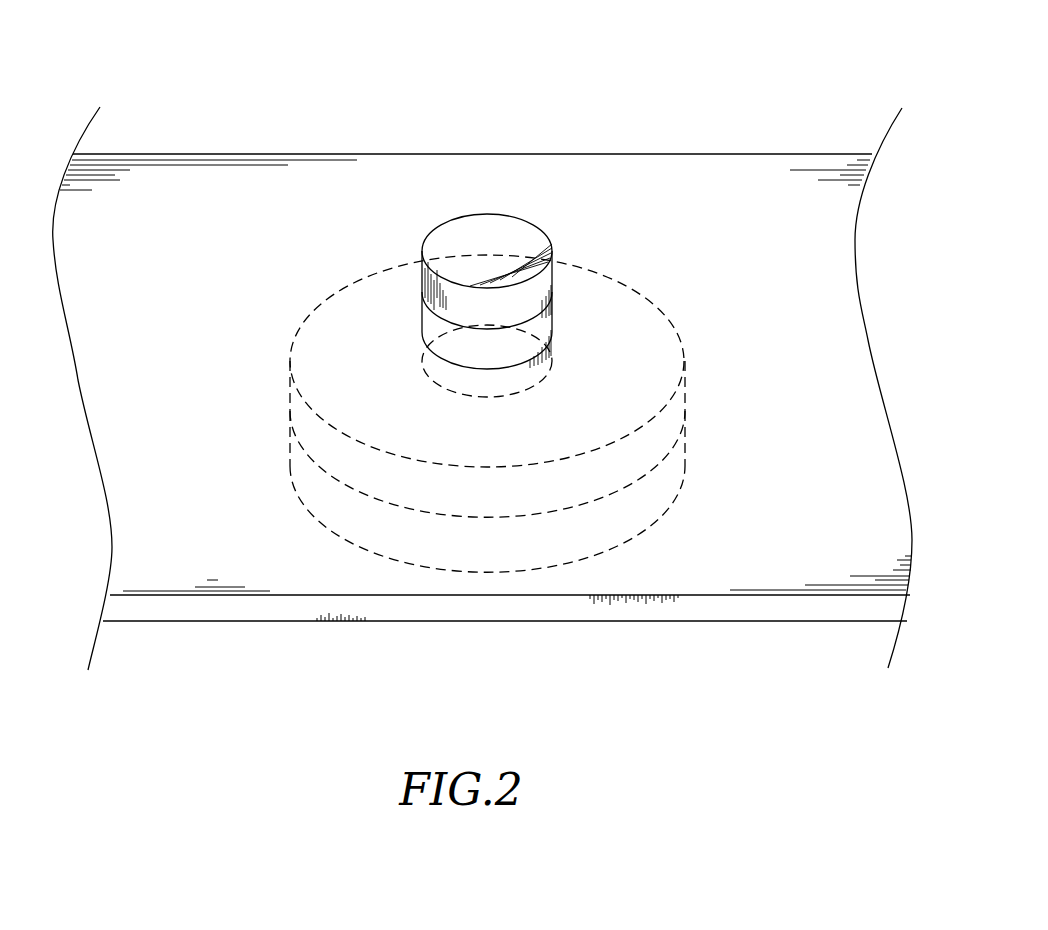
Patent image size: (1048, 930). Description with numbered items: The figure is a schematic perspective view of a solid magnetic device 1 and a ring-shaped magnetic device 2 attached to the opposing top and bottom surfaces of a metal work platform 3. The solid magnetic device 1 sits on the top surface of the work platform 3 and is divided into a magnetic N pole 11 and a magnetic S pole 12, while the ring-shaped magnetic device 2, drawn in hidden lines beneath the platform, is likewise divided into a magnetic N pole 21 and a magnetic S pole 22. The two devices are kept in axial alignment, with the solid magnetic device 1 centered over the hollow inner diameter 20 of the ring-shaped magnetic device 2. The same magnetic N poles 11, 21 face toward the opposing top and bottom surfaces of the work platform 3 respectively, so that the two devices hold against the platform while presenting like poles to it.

The solid magnetic device 1 is at (532, 191).
The magnetic N pole 11 is at (543, 328).
The magnetic S pole 12 is at (503, 235).
The ring-shaped magnetic device 2 is at (656, 411).
The hollow inner diameter 20 is at (546, 364).
The magnetic N pole 21 is at (686, 412).
The magnetic S pole 22 is at (686, 474).
The work platform 3 is at (710, 170).